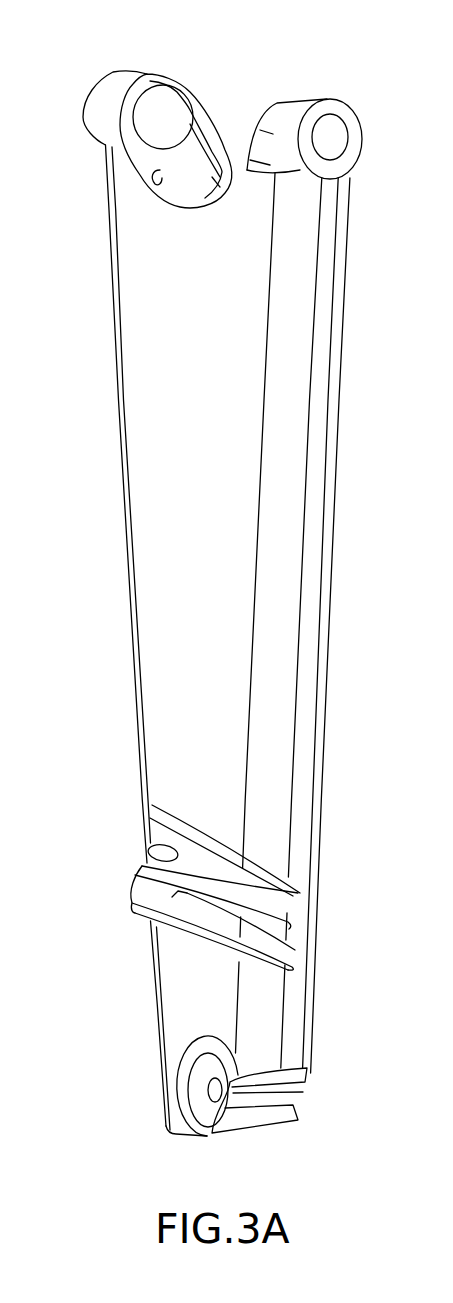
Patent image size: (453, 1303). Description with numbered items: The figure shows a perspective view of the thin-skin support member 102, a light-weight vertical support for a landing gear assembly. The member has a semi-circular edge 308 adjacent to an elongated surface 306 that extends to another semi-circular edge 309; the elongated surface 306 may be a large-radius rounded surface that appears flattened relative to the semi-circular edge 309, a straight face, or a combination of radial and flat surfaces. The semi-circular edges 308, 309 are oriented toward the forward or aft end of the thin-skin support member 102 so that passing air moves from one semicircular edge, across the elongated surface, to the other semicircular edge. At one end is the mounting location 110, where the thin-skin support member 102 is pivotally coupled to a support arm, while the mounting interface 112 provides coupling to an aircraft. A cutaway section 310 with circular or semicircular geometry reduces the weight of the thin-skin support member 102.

The thin-skin support member 102 is at (223, 260).
The mounting location 110 is at (150, 861).
The mounting interface 112 is at (163, 110).
The elongated surface 306 is at (168, 460).
The semi-circular edge 308 is at (320, 318).
The semi-circular edge 309 is at (118, 382).
The cutaway section 310 is at (167, 187).